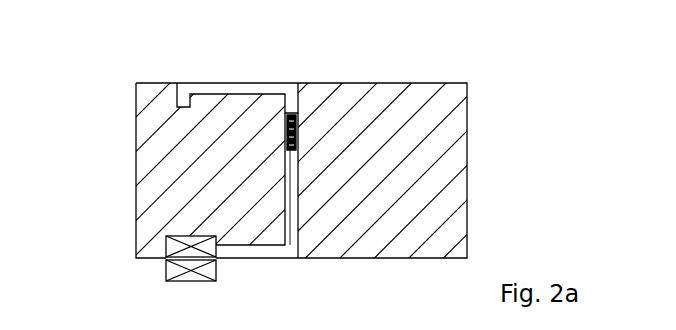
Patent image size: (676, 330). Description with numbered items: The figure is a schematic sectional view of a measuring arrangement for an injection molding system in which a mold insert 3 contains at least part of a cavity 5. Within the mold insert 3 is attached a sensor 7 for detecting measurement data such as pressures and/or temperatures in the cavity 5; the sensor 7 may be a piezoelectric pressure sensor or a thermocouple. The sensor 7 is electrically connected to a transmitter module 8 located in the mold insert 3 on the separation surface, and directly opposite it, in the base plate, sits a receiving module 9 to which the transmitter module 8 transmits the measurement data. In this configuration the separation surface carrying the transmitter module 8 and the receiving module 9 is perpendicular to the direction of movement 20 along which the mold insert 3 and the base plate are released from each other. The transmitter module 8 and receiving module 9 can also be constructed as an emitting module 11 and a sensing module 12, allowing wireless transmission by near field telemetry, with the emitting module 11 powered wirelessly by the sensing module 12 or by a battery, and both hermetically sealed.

The mold insert 3 is at (452, 139).
The cavity 5 is at (245, 85).
The sensor 7 is at (292, 110).
The direction of movement 20 is at (422, 95).
The transmitter module 8 is at (126, 233).
The emitting module 11 is at (168, 241).
The receiving module 9 is at (129, 276).
The sensing module 12 is at (165, 277).